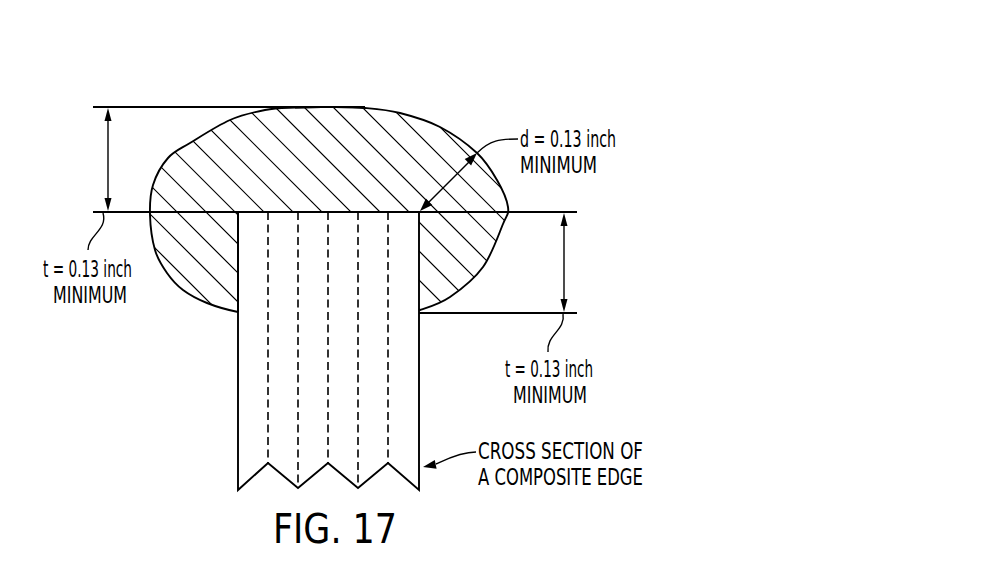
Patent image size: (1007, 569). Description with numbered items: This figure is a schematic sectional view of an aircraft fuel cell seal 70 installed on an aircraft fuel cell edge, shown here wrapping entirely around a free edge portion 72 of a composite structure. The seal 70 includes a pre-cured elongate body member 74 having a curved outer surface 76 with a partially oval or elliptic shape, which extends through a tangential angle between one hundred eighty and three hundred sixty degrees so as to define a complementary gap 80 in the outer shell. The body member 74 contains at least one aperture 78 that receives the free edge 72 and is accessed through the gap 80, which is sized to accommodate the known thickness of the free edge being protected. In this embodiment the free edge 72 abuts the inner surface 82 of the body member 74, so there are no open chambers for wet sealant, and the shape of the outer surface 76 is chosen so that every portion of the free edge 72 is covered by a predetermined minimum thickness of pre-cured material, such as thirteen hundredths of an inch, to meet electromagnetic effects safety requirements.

The aircraft fuel cell seal 70 is at (350, 251).
The free edge portion 72 is at (328, 351).
The pre-cured elongate body member 74 is at (337, 183).
The curved outer surface 76 is at (362, 107).
The aperture 78 is at (313, 316).
The gap 80 is at (239, 250).
The inner surface 82 is at (372, 213).